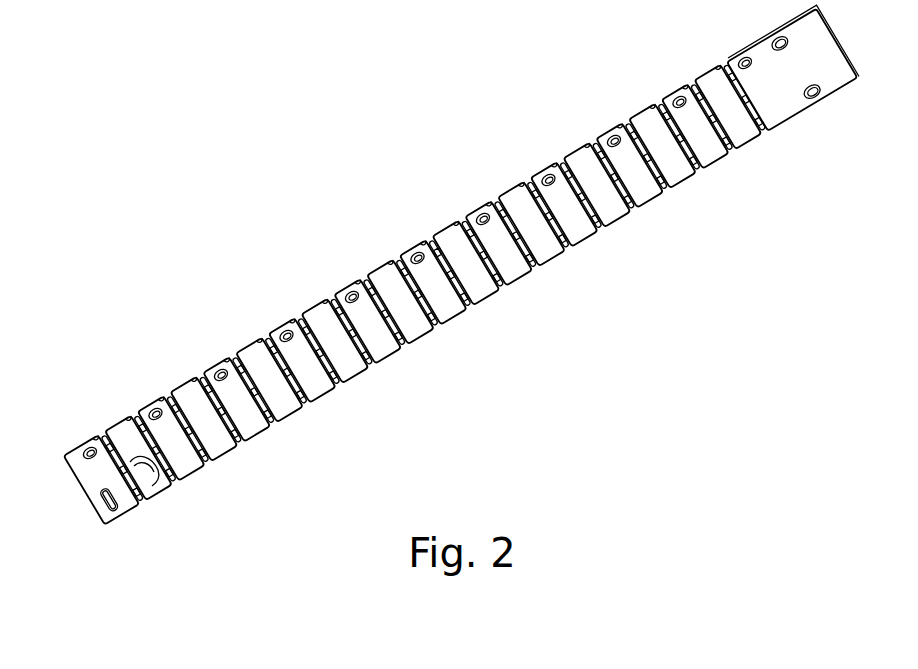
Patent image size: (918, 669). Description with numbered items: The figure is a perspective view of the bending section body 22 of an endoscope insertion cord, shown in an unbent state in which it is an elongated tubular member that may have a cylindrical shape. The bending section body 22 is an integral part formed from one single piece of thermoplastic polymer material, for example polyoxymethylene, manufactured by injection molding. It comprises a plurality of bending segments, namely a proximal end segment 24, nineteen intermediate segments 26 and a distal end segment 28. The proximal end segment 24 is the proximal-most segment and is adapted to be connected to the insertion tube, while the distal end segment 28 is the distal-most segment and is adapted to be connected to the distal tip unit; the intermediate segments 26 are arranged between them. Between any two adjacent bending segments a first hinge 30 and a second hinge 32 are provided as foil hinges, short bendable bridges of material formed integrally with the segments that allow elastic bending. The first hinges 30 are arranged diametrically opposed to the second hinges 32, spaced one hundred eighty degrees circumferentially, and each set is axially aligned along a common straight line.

The bending section body 22 is at (435, 178).
The proximal end segment 24 is at (782, 110).
The intermediate segments 26 is at (738, 137).
The distal end segment 28 is at (77, 456).
The first hinge 30 is at (200, 376).
The second hinge 32 is at (307, 408).